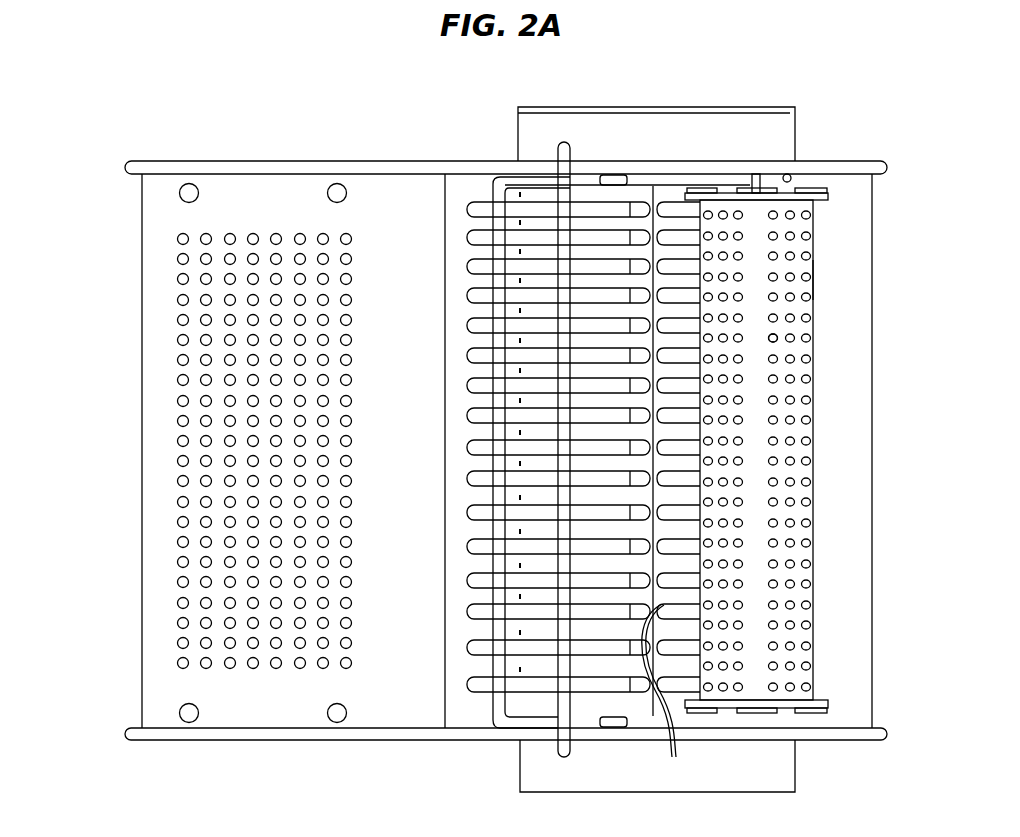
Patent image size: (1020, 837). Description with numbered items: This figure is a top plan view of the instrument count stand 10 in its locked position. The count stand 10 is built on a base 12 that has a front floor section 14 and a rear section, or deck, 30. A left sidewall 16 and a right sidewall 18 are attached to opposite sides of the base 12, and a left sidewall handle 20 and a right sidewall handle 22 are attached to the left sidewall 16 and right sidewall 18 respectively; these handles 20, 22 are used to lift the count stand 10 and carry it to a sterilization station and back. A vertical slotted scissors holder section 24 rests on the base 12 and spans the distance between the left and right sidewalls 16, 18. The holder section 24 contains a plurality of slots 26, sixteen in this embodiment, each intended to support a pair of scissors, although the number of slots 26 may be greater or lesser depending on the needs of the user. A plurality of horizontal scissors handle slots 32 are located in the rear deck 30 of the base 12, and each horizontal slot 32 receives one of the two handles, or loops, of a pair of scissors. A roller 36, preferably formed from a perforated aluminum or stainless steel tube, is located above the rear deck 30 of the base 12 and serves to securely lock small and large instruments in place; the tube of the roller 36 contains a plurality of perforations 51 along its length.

The instrument count stand 10 is at (150, 126).
The base 12 is at (142, 690).
The front floor section 14 is at (422, 448).
The left sidewall 16 is at (415, 740).
The right sidewall 18 is at (312, 162).
The left sidewall handle 20 is at (782, 762).
The right sidewall handle 22 is at (690, 125).
The vertical slotted scissors holder section 24 is at (477, 184).
The slots 26 is at (470, 209).
The rear deck 30 is at (857, 493).
The horizontal scissors handle slots 32 is at (664, 695).
The roller 36 is at (808, 284).
The perforations 51 is at (782, 338).